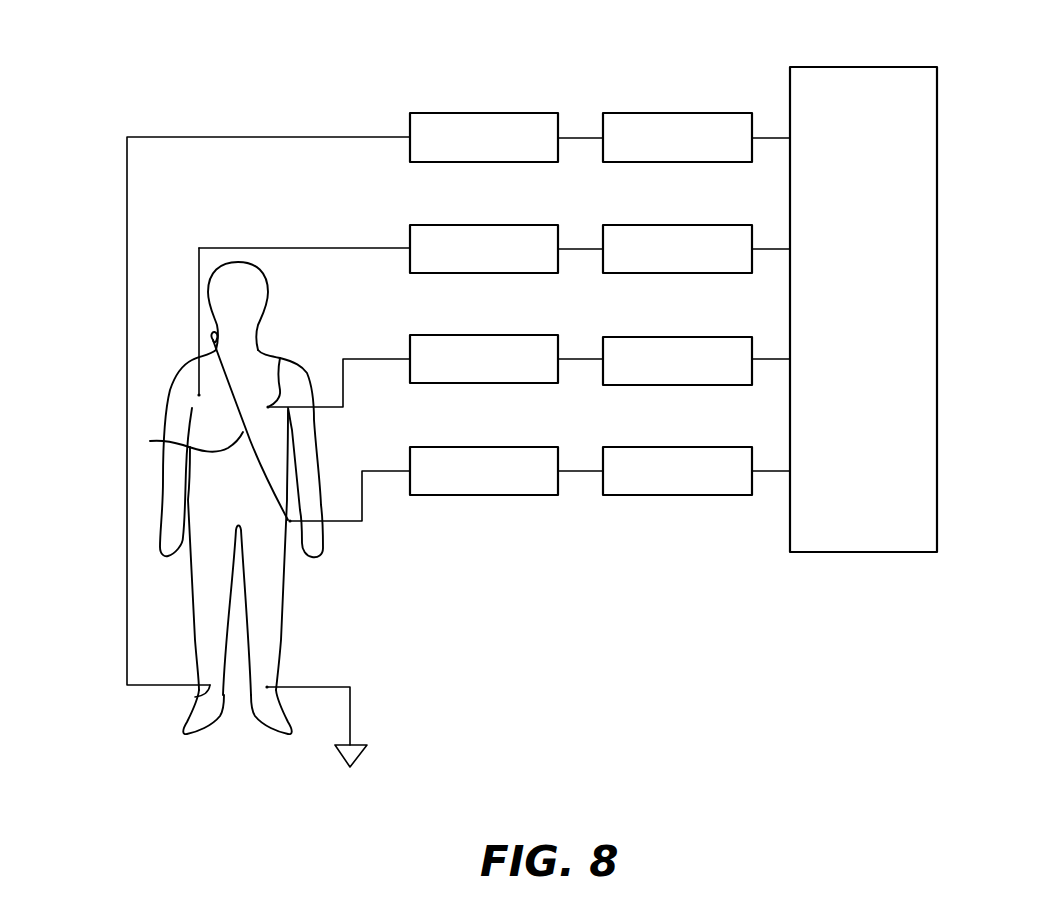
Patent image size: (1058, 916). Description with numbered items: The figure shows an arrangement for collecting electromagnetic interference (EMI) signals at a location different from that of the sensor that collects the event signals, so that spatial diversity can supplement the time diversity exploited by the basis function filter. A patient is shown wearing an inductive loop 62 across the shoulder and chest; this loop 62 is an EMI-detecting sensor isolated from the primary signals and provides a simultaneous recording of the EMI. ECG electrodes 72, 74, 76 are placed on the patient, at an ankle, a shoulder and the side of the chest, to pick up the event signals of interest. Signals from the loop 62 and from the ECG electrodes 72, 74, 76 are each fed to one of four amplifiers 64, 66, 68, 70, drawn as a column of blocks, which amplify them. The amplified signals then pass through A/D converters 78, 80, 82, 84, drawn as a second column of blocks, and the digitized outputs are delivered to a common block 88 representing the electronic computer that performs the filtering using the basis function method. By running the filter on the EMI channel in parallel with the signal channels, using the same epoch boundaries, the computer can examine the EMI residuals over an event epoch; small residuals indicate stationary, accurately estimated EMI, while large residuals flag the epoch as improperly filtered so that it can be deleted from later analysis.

The inductive loop 62 is at (150, 441).
The amplifier 64 is at (493, 447).
The amplifier 66 is at (493, 335).
The amplifier 68 is at (487, 225).
The amplifier 70 is at (493, 113).
The ECG electrode 72 is at (195, 697).
The ECG electrode 74 is at (199, 395).
The ECG electrode 76 is at (280, 358).
The A/D converter 78 is at (690, 447).
The A/D converter 80 is at (688, 337).
The A/D converter 82 is at (683, 225).
The A/D converter 84 is at (690, 113).
The processor 88 is at (828, 67).